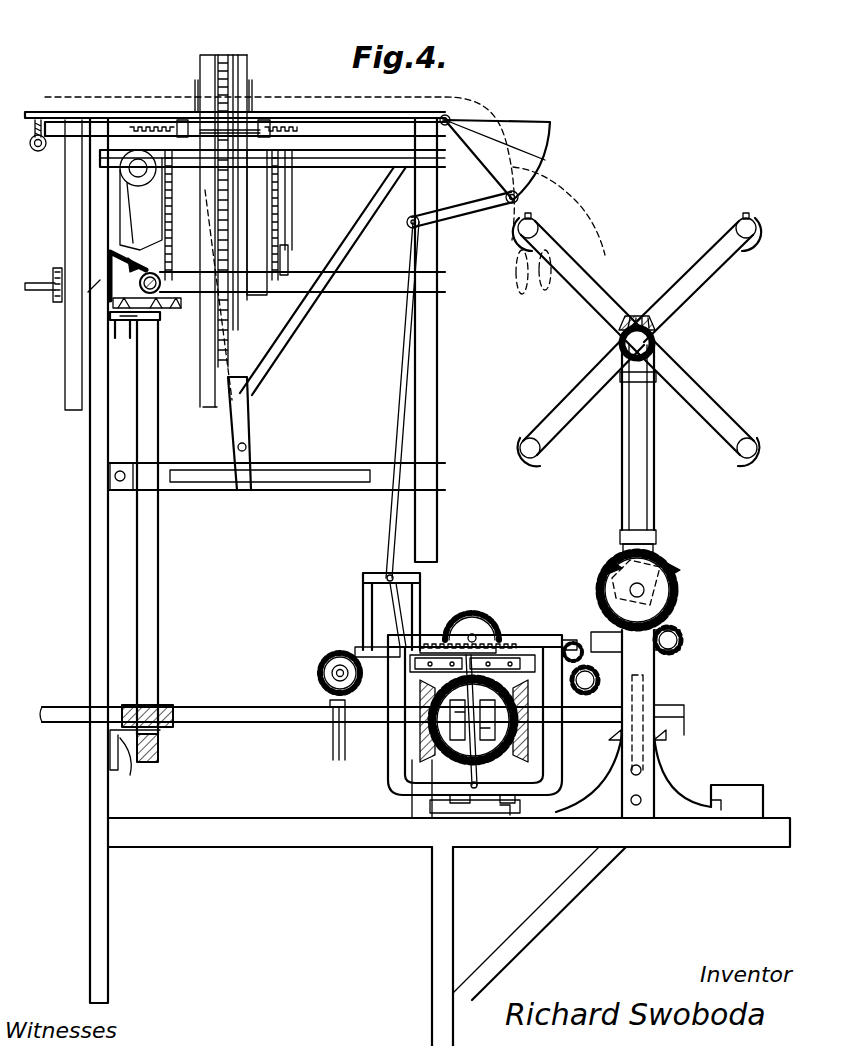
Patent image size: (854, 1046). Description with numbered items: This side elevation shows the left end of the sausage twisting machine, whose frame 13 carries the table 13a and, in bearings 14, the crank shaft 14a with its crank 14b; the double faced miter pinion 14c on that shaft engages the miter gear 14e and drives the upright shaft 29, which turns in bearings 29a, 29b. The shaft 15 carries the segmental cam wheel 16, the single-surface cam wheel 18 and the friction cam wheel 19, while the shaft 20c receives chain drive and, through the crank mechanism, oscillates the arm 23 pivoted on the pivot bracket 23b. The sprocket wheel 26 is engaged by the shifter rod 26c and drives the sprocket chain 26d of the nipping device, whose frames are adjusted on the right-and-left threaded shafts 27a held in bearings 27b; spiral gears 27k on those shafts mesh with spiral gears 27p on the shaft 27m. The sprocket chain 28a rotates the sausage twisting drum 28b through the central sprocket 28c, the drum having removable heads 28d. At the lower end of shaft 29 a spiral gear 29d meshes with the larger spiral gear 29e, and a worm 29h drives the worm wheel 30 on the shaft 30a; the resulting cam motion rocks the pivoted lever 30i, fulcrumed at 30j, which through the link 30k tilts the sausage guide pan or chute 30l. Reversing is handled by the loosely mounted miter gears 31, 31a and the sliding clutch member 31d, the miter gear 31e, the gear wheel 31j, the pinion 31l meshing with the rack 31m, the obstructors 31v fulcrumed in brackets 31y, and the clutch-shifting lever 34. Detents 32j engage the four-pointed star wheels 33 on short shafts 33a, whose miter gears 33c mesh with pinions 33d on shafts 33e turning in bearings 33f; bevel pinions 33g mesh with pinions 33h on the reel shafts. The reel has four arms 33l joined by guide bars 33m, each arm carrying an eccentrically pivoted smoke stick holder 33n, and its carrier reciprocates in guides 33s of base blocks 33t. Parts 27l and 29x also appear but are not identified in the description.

The frame 13 is at (322, 840).
The table 13a is at (395, 116).
The bearings 14 is at (130, 276).
The crank shaft 14a is at (140, 320).
The crank 14b is at (140, 212).
The double faced miter pinion 14c is at (152, 272).
The miter gear 14e is at (172, 310).
The shaft 15 is at (87, 291).
The segmental cam wheel 16 is at (240, 333).
The cam wheel 18 is at (210, 357).
The friction cam wheel 19 is at (70, 240).
The shaft 20c is at (43, 283).
The arm 23 is at (238, 424).
The pivot bracket 23b is at (246, 447).
The sprocket wheel 26 is at (53, 300).
The shifter rod 26c is at (282, 235).
The sprocket chain 26d is at (290, 196).
The shafts 27a is at (72, 128).
The bearings 27b is at (312, 125).
The spiral gears 27k is at (38, 120).
The guide block 27l is at (305, 103).
The shaft 27m is at (40, 152).
The spiral gears 27p is at (48, 144).
The sprocket chain 28a is at (222, 58).
The sausage twisting drum 28b is at (271, 174).
The sprocket 28c is at (268, 32).
The removable heads 28d is at (250, 70).
The upright shaft 29 is at (158, 527).
The bearings 29a is at (120, 316).
The bearings 29b is at (134, 752).
The spiral gear 29d is at (172, 710).
The larger spiral gear 29e is at (159, 748).
The worm 29h is at (332, 727).
The shaft 29x is at (246, 714).
The worm wheel 30 is at (329, 665).
The shaft 30a is at (334, 673).
The pivoted lever 30i is at (375, 524).
The fulcrum 30j is at (388, 578).
The link 30k is at (508, 208).
The sausage guide pan or chute 30l is at (540, 140).
The miter gear 31 is at (555, 712).
The miter gear 31a is at (425, 742).
The clutch member 31d is at (484, 729).
The miter gear 31e is at (490, 750).
The gear wheel 31j is at (474, 612).
The pinion 31l is at (486, 632).
The rack 31m is at (492, 648).
The obstructors 31v is at (572, 650).
The brackets 31y is at (572, 662).
The detents or restrainers 32j is at (676, 637).
The star wheels 33 is at (672, 566).
The short shafts 33a is at (660, 591).
The miter gears 33c is at (612, 591).
The pinions 33d is at (614, 566).
The shafts 33e is at (640, 438).
The bearings 33f is at (641, 536).
The bevel pinions 33g is at (655, 321).
The pinions 33h is at (658, 340).
The arms 33l is at (687, 290).
The guide bars 33m is at (531, 218).
The smoke stick holder 33n is at (740, 245).
The guides 33s is at (716, 815).
The base blocks 33t is at (752, 815).
The clutch-shifting lever 34 is at (477, 799).